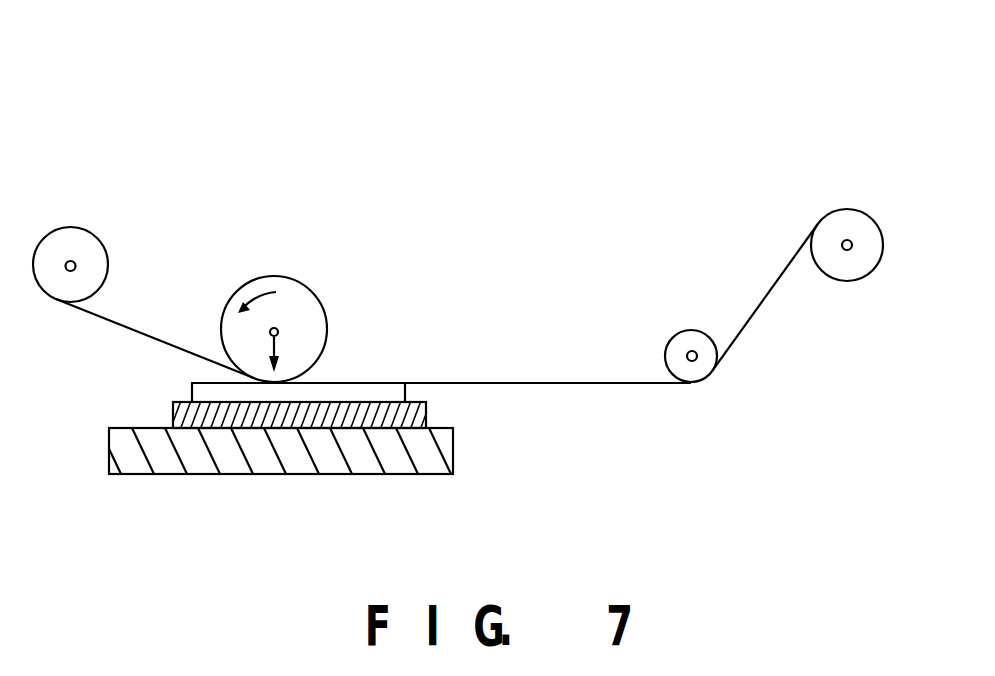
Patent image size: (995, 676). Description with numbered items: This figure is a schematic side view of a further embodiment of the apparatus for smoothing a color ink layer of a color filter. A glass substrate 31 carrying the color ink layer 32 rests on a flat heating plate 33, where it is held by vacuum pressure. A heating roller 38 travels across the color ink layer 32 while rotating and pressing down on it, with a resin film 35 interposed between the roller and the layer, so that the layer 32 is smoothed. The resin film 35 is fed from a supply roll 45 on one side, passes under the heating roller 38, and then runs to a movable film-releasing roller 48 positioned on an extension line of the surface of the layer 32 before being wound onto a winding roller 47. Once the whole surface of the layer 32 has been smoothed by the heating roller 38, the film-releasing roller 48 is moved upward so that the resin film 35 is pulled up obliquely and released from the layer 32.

The glass substrate 31 is at (428, 415).
The color ink layer 32 is at (400, 382).
The flat heating plate 33 is at (369, 468).
The resin film 35 is at (137, 332).
The heating roller 38 is at (312, 302).
The supply roll 45 is at (83, 242).
The winding roller 47 is at (848, 220).
The movable film-releasing roller 48 is at (692, 338).